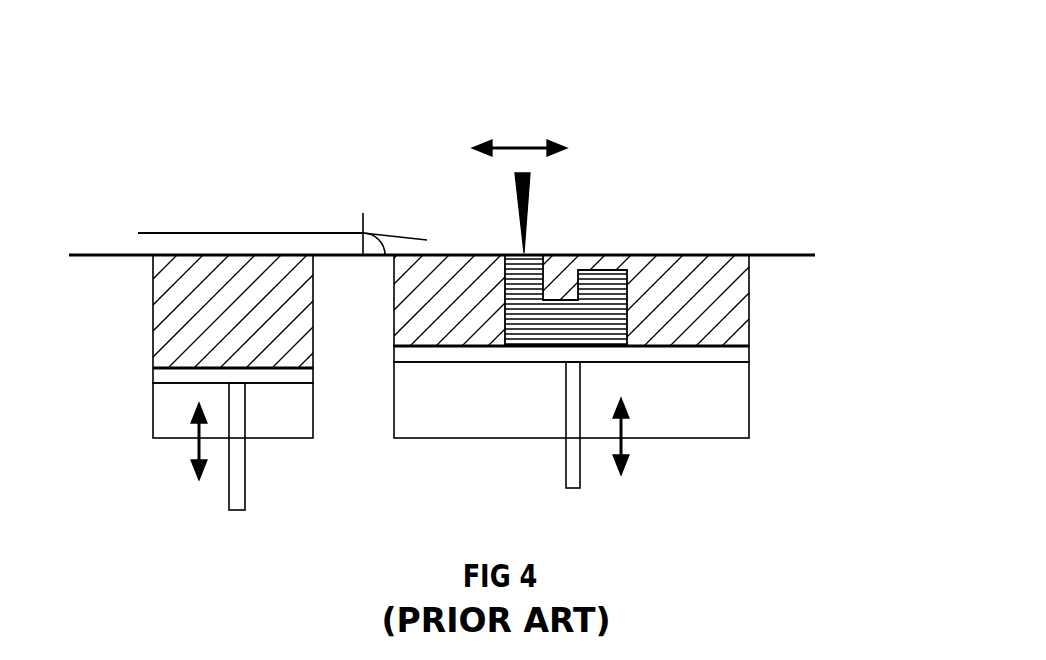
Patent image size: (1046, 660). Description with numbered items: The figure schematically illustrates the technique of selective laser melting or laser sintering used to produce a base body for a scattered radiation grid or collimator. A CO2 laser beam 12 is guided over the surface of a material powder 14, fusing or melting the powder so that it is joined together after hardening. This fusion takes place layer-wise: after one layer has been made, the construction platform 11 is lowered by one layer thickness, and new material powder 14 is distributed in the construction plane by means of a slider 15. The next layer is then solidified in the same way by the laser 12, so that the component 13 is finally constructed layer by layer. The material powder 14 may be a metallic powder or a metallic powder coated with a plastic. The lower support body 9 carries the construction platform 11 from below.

The lower support block 9 is at (749, 410).
The construction platform 11 is at (735, 352).
The CO2 laser beam 12 is at (530, 195).
The component 13 is at (627, 305).
The material powder 14 is at (417, 327).
The slider 15 is at (278, 232).